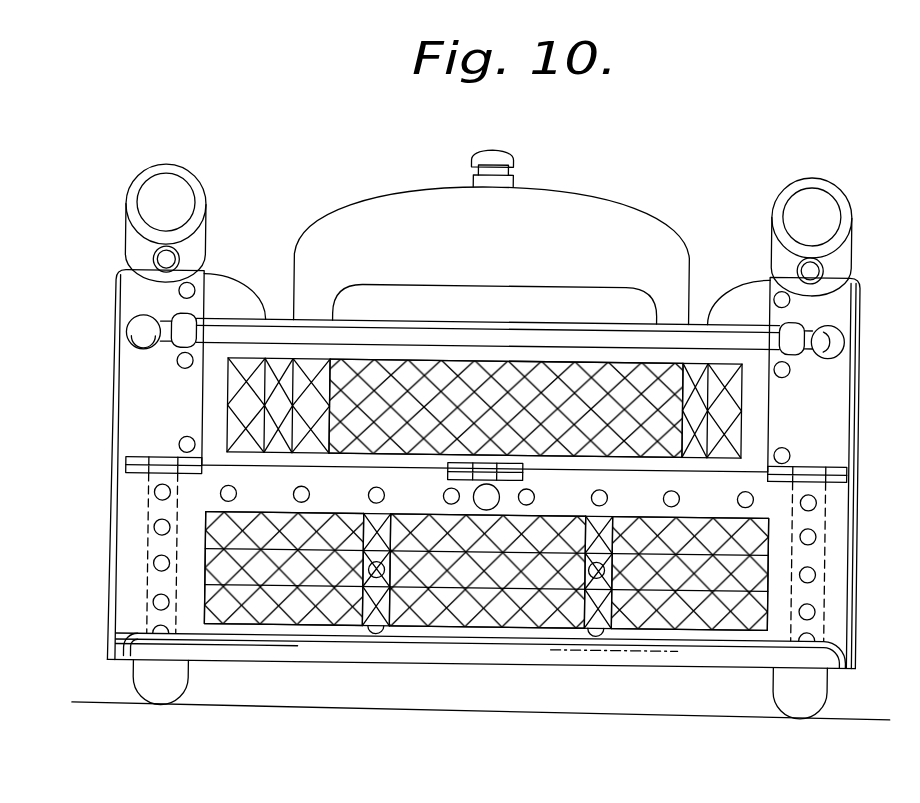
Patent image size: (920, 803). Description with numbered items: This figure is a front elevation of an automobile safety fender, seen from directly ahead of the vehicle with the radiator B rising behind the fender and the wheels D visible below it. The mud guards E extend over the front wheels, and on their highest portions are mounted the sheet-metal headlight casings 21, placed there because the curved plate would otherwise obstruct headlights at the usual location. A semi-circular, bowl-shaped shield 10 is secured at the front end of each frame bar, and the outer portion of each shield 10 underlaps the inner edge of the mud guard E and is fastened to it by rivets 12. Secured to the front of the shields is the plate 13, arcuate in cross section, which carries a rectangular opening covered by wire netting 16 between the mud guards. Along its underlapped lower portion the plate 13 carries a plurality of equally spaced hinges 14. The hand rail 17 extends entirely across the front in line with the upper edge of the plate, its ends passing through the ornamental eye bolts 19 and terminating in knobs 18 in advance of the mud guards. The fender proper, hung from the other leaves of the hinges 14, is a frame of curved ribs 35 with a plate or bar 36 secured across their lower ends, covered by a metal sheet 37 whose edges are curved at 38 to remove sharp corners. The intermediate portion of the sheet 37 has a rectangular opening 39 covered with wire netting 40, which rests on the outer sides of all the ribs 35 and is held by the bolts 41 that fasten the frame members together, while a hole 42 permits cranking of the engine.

The headlight casing 21 is at (166, 175).
The radiator B is at (395, 210).
The shield 10 is at (226, 292).
The mud guard E is at (130, 385).
The hand rail 17 is at (486, 346).
The eye bolt 19 is at (182, 318).
The knob 18 is at (126, 339).
The rivet 12 is at (184, 441).
The wire netting 16 is at (480, 410).
The plate 13 is at (486, 408).
The hinge 14 is at (130, 474).
The bolt 41 is at (238, 495).
The hole 42 is at (500, 493).
The rectangular opening 39 is at (326, 515).
The curved rib 35 is at (378, 615).
The plate or bar 36 is at (272, 573).
The wire netting 40 is at (703, 620).
The metal sheet 37 is at (830, 569).
The curved edge 38 is at (110, 567).
The wheel D is at (165, 695).